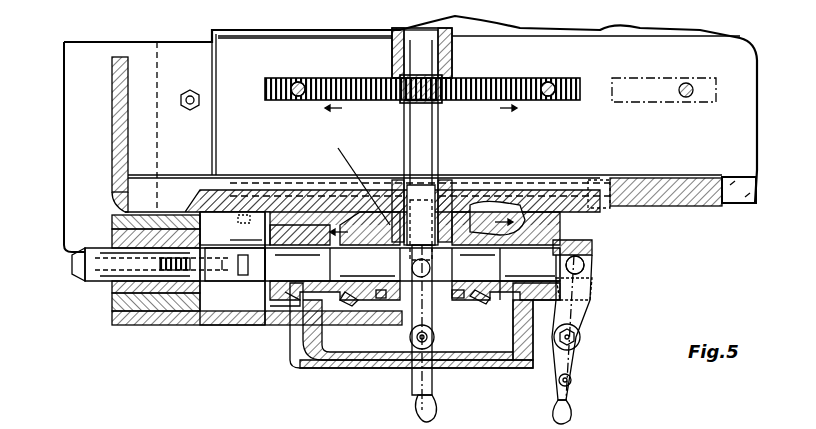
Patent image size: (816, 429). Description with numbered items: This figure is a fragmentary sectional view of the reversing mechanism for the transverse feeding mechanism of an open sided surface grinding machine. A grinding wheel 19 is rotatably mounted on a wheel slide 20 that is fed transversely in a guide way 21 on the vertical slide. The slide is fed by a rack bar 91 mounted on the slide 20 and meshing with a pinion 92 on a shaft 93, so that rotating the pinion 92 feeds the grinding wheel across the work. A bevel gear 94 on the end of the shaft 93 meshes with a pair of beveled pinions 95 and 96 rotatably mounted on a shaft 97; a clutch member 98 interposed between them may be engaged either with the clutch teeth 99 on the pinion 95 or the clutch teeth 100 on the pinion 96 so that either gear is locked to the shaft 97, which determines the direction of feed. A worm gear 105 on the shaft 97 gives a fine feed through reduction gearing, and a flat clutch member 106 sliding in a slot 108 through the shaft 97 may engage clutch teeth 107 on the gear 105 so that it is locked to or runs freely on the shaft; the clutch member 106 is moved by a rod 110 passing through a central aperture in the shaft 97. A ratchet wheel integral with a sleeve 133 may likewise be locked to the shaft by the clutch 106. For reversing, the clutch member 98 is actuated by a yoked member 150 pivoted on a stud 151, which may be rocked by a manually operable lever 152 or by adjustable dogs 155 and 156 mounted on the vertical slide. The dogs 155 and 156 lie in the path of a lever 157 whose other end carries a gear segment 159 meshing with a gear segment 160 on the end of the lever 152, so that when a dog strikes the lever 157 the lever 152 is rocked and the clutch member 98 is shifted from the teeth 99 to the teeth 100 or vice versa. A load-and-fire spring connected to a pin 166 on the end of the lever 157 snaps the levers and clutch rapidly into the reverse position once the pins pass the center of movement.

The grinding wheel 19 is at (153, 137).
The wheel slide 20 is at (745, 135).
The guide way 21 is at (740, 203).
The rack bar 91 is at (545, 103).
The pinion 92 is at (446, 105).
The shaft 93 is at (404, 138).
The bevel gear 94 is at (349, 175).
The beveled pinion 95 is at (355, 300).
The beveled pinion 96 is at (486, 300).
The shaft 97 is at (500, 268).
The clutch member 98 is at (432, 260).
The clutch teeth 99 is at (388, 300).
The clutch teeth 100 is at (462, 298).
The worm gear 105 is at (290, 295).
The clutch member 106 is at (232, 262).
The clutch teeth 107 is at (262, 270).
The slot 108 is at (248, 272).
The rod 110 is at (78, 270).
The sleeve 133 is at (150, 300).
The yoked member 150 is at (419, 275).
The stud 151 is at (432, 345).
The lever 152 is at (438, 415).
The dog 155 is at (262, 215).
The dog 156 is at (612, 200).
The lever 157 is at (390, 190).
The gear segment 159 is at (490, 212).
The gear segment 160 is at (420, 300).
The pin 166 is at (448, 190).